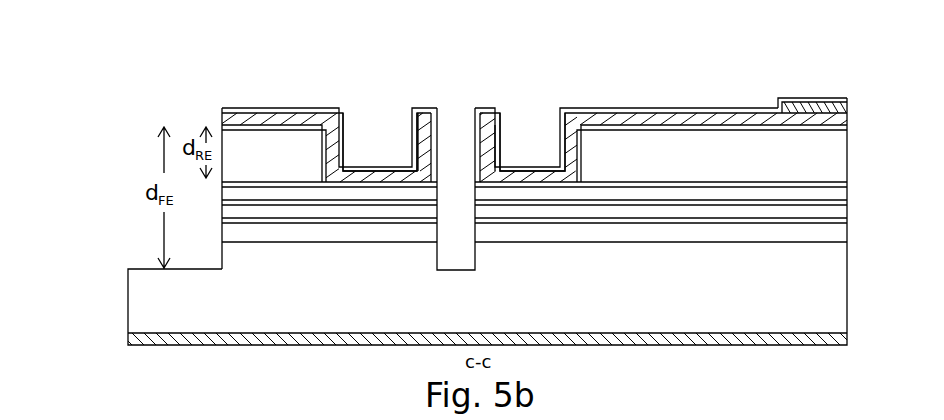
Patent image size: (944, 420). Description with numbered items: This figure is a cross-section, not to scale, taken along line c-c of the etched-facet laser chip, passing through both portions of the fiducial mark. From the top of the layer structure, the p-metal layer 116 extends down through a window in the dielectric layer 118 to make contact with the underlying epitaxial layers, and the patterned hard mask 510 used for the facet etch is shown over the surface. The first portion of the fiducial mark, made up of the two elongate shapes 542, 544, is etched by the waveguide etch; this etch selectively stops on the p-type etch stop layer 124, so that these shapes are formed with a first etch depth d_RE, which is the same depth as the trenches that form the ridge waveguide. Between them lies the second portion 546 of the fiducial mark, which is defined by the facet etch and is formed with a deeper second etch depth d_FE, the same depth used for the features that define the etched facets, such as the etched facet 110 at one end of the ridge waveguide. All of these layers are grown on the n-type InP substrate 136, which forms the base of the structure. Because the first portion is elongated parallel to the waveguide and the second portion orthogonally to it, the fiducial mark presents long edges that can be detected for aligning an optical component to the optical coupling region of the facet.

The etched facet 110 is at (222, 190).
The n-type InP substrate 136 is at (137, 302).
The p-type etch stop layer 124 is at (534, 125).
The patterned hard mask 510 is at (315, 108).
The dielectric layer 118 is at (259, 113).
The first portion of the fiducial mark 542 is at (403, 151).
The first portion of the fiducial mark 544 is at (553, 152).
The second portion of the fiducial mark 546 is at (472, 199).
The p-metal layer 116 is at (795, 98).